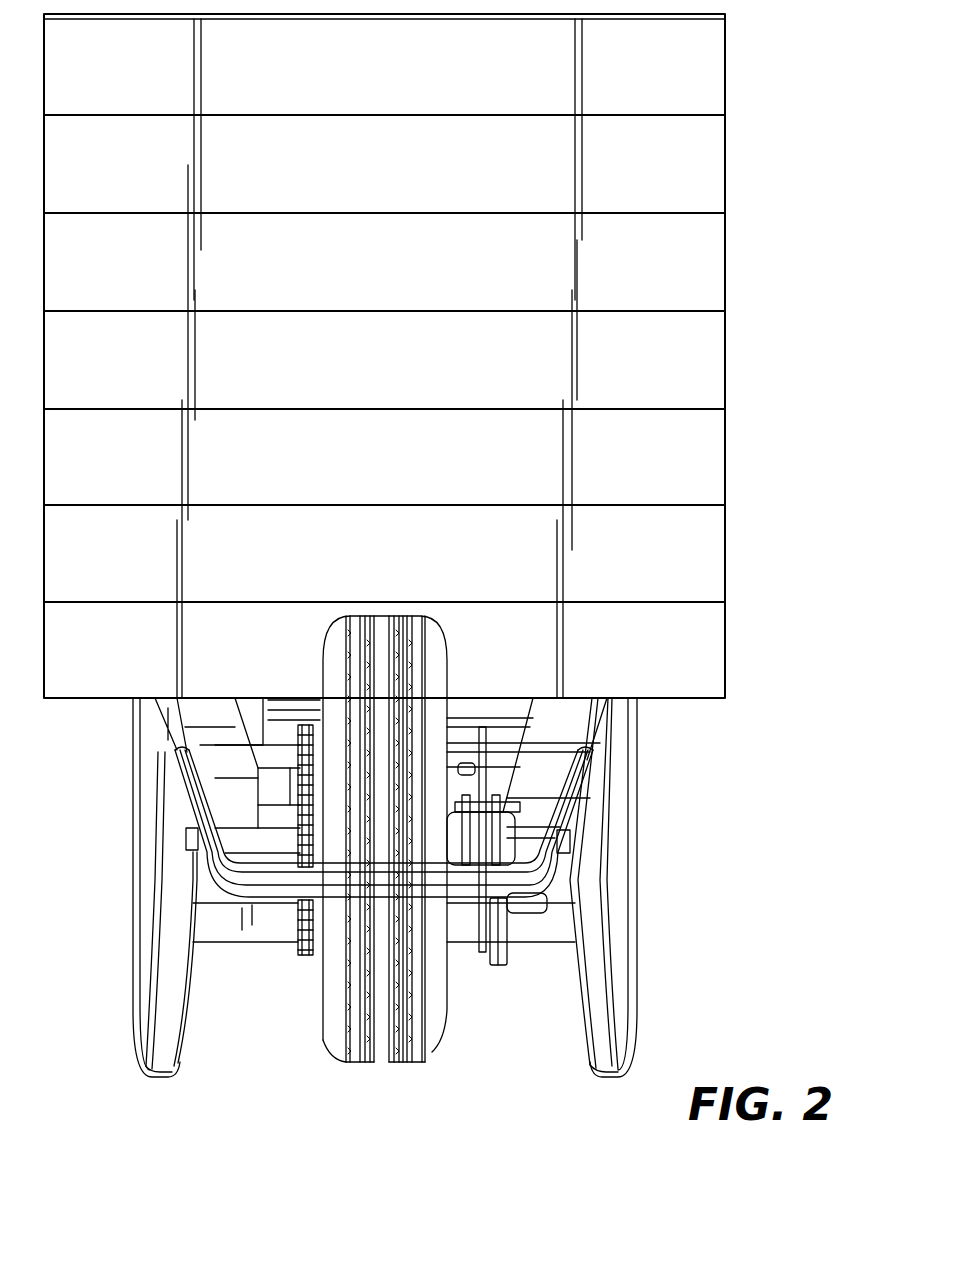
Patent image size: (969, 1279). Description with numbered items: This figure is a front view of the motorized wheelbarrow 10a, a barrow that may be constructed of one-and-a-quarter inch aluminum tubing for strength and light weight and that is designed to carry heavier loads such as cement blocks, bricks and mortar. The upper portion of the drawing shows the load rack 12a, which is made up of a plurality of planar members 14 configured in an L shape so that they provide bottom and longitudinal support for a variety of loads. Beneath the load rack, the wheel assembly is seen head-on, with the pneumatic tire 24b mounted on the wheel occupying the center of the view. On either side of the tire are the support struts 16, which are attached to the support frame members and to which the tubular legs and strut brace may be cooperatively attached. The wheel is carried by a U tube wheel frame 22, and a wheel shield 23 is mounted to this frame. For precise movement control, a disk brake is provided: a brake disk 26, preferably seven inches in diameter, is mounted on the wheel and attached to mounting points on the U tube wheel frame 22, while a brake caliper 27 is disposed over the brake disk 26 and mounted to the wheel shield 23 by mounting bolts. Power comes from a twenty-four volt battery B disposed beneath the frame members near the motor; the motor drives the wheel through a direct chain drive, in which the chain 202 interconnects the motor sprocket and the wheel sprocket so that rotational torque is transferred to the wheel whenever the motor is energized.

The wheelbarrow 10a is at (740, 405).
The load rack 12a is at (740, 58).
The planar members 14 is at (471, 66).
The support strut 16 is at (168, 975).
The chain 202 is at (295, 952).
The U tube wheel frame 22 is at (528, 902).
The wheel shield 23 is at (508, 963).
The brake disk 26 is at (483, 952).
The brake caliper 27 is at (512, 832).
The pneumatic tire 24b is at (432, 1052).
The battery B is at (477, 708).